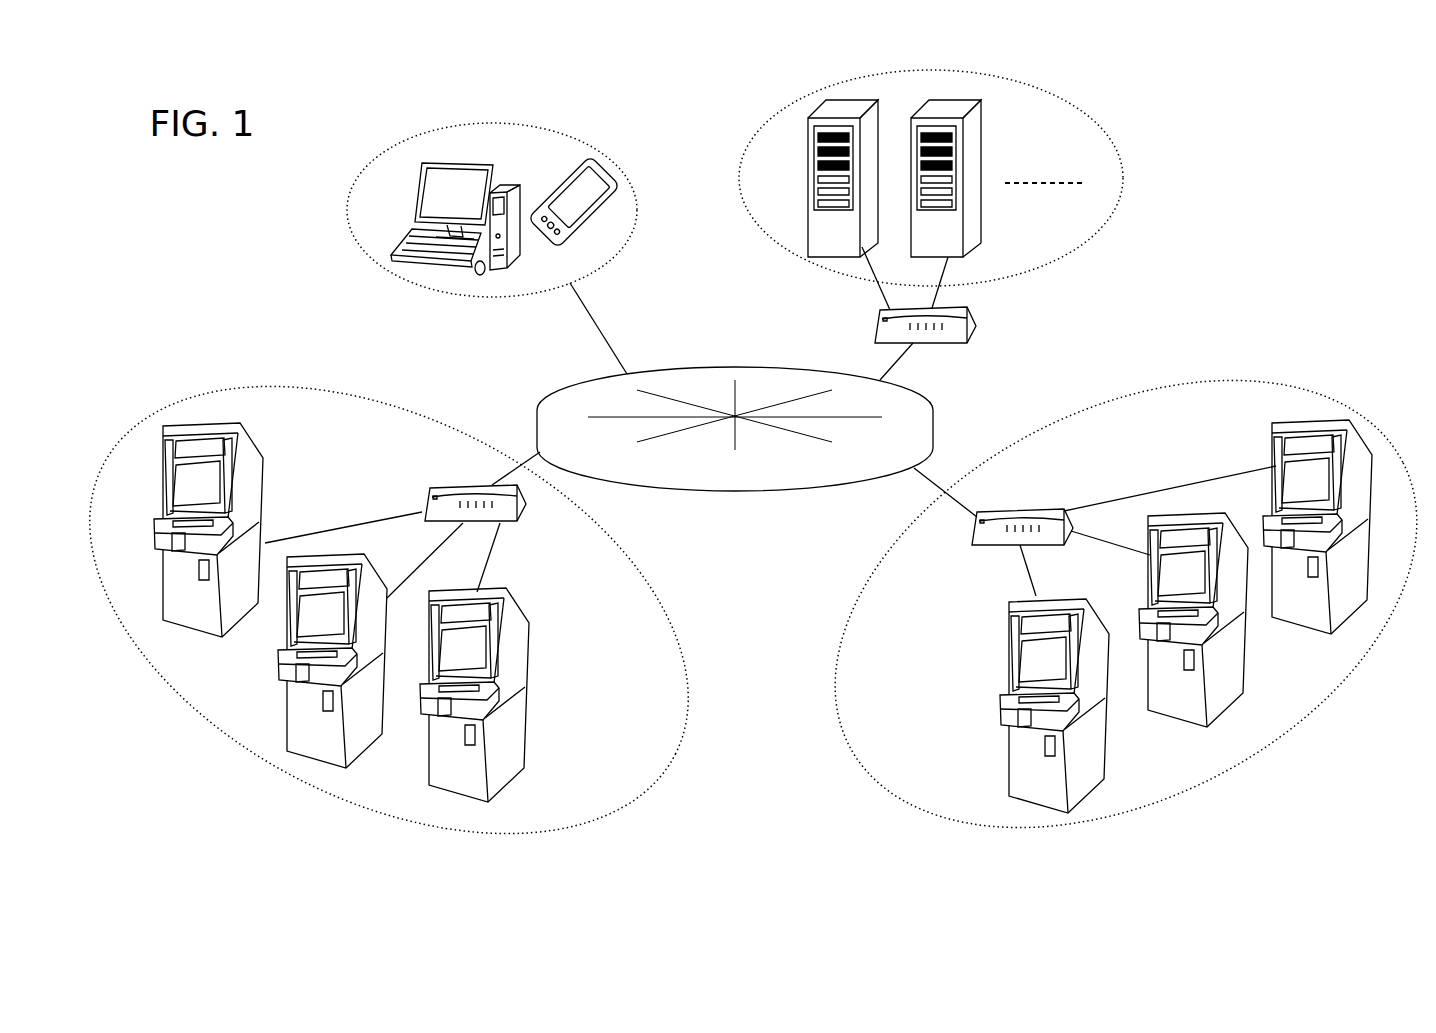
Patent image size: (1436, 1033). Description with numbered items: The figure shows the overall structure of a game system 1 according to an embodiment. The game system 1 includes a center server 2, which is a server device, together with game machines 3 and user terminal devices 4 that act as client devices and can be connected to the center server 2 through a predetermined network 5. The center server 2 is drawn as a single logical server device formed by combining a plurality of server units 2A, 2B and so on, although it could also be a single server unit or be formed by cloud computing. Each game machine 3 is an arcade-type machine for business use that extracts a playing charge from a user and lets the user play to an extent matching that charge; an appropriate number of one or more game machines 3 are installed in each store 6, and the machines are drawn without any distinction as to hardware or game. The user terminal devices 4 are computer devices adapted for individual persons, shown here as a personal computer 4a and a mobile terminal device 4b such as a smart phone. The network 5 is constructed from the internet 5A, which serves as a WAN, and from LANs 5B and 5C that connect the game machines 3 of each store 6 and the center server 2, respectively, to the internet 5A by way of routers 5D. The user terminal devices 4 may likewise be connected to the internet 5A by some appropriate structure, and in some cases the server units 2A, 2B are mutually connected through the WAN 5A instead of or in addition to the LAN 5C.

The game system 1 is at (1226, 224).
The center server 2 is at (1103, 128).
The server unit 2A is at (830, 108).
The server unit 2B is at (925, 110).
The game machine 3 is at (437, 750).
The user terminal device 4 is at (618, 157).
The personal computer 4a is at (457, 167).
The mobile terminal device 4b is at (607, 197).
The network 5 is at (563, 375).
The internet 5A is at (680, 370).
The LAN 5B is at (566, 552).
The LAN 5C is at (957, 278).
The router 5D is at (880, 323).
The store 6 is at (332, 385).